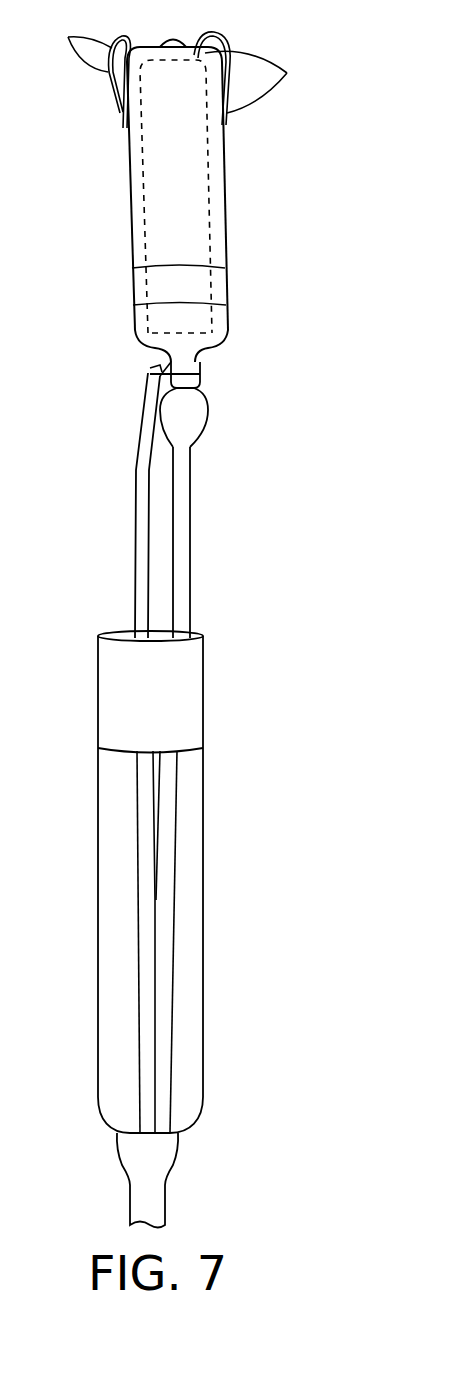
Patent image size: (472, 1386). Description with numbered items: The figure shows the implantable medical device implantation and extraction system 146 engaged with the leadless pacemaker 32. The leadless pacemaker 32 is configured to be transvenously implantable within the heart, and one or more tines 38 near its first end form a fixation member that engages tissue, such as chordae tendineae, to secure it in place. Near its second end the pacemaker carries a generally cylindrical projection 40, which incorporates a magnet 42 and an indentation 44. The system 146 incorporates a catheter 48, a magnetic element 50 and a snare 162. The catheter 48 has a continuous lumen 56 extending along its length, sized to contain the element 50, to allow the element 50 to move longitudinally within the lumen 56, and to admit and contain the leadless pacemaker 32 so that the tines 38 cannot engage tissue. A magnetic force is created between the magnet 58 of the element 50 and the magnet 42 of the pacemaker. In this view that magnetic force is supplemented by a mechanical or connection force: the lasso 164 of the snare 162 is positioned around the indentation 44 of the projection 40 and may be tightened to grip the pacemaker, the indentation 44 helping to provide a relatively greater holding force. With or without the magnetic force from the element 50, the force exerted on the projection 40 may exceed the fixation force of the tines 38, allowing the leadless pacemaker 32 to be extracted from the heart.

The leadless pacemaker 32 is at (207, 193).
The tines 38 is at (179, 74).
The projection 40 is at (148, 371).
The magnet 42 is at (200, 372).
The indentation 44 is at (185, 357).
The catheter 48 is at (98, 930).
The magnetic element 50 is at (192, 560).
The lumen 56 is at (115, 795).
The magnet 58 is at (200, 408).
The implantable medical device implantation and extraction system 146 is at (100, 590).
The snare 162 is at (133, 517).
The lasso 164 is at (162, 357).